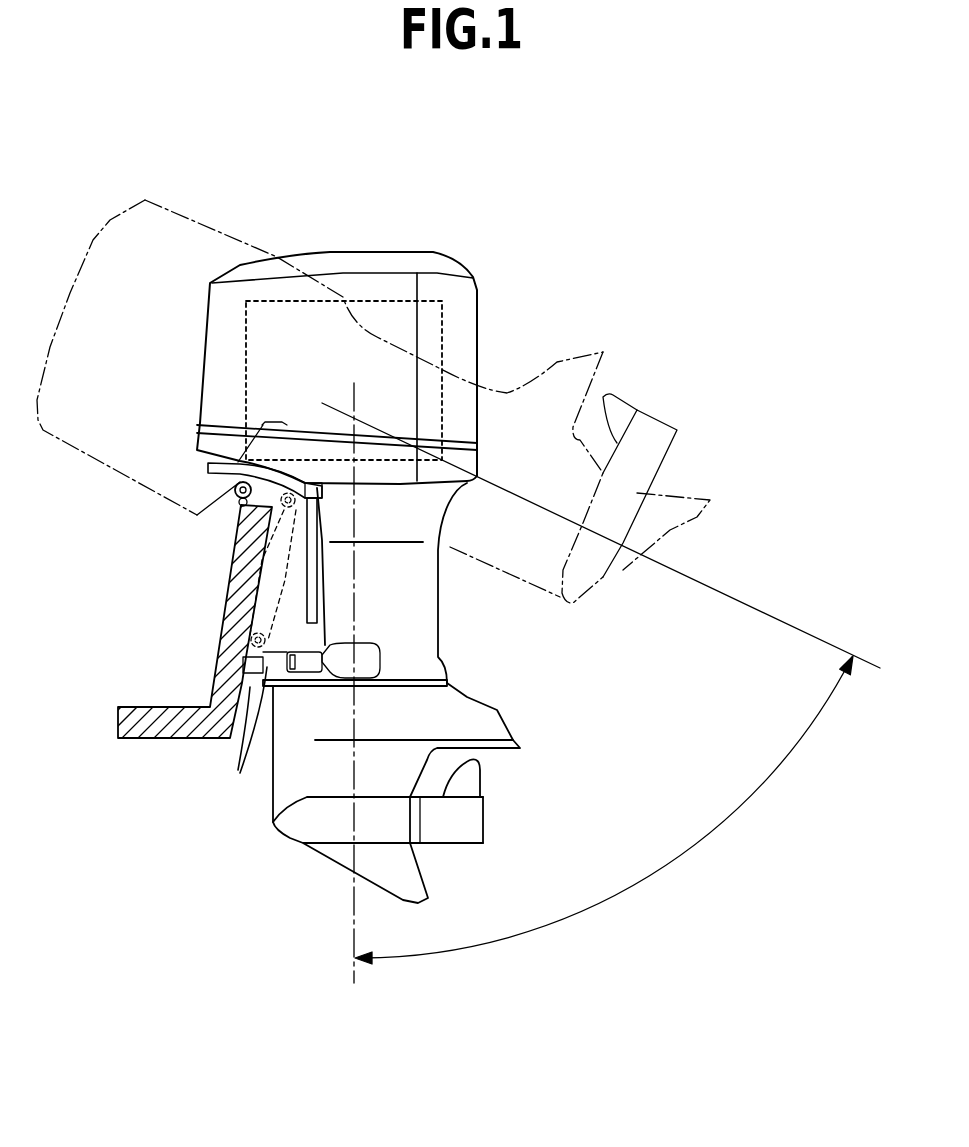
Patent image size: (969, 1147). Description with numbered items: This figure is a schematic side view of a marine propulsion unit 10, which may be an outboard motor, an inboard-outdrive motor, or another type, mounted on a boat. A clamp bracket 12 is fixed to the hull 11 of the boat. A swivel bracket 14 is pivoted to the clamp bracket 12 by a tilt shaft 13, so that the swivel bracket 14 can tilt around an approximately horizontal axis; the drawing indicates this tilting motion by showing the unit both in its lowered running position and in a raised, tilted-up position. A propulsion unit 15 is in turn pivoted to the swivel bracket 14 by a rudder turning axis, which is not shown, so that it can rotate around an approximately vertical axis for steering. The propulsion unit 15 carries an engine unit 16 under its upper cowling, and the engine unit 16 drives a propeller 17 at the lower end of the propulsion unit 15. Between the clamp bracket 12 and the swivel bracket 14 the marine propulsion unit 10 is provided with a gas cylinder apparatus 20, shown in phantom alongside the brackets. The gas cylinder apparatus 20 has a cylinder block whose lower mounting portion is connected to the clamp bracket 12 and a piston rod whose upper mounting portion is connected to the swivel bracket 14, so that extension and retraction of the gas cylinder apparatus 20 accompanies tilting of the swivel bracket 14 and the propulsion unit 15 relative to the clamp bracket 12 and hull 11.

The marine propulsion unit 10 is at (484, 494).
The hull 11 is at (137, 707).
The clamp bracket 12 is at (246, 738).
The tilt shaft 13 is at (232, 487).
The swivel bracket 14 is at (305, 590).
The propulsion unit 15 is at (443, 590).
The engine unit 16 is at (444, 344).
The propeller 17 is at (483, 782).
The gas cylinder apparatus 20 is at (223, 612).